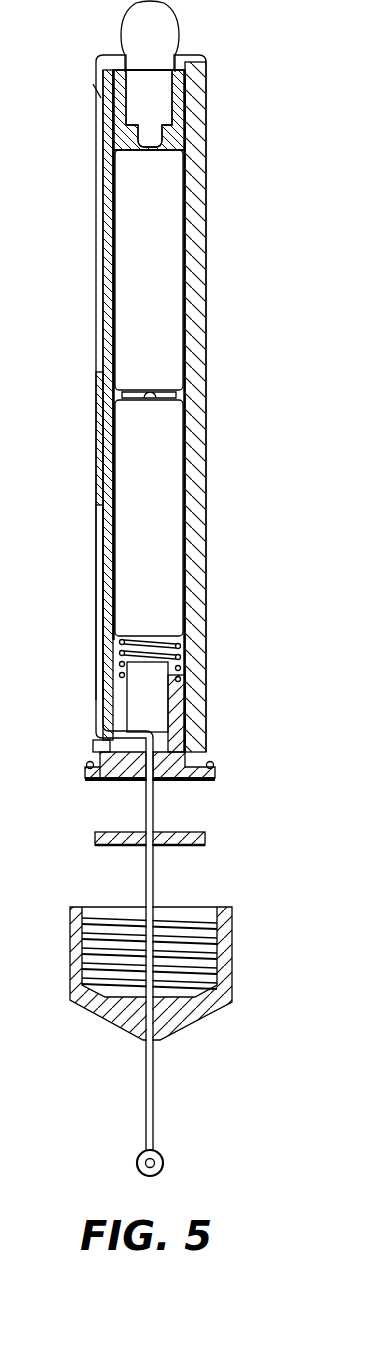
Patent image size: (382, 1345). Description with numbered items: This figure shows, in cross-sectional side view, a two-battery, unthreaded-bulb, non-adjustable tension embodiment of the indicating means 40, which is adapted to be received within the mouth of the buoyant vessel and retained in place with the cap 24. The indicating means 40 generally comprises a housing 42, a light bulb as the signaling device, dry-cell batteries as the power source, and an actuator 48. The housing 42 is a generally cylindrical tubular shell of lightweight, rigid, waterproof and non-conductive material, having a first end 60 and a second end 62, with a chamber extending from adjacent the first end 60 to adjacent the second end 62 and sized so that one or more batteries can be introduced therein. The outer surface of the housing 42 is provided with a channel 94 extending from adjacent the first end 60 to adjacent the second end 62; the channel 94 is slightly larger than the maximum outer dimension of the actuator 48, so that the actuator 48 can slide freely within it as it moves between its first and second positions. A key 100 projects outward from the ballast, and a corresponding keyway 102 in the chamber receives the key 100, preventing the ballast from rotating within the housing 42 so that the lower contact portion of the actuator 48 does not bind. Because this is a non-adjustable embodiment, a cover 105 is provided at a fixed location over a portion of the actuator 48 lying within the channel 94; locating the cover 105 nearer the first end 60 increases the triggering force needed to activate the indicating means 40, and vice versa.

The indicating means 40 is at (279, 119).
The housing 42 is at (193, 256).
The first end 60 is at (203, 60).
The actuator 48 is at (103, 238).
The cover 105 is at (96, 430).
The channel 94 is at (96, 577).
The keyway 102 is at (108, 748).
The key 100 is at (108, 758).
The second end 62 is at (208, 781).
The cap 24 is at (188, 1021).